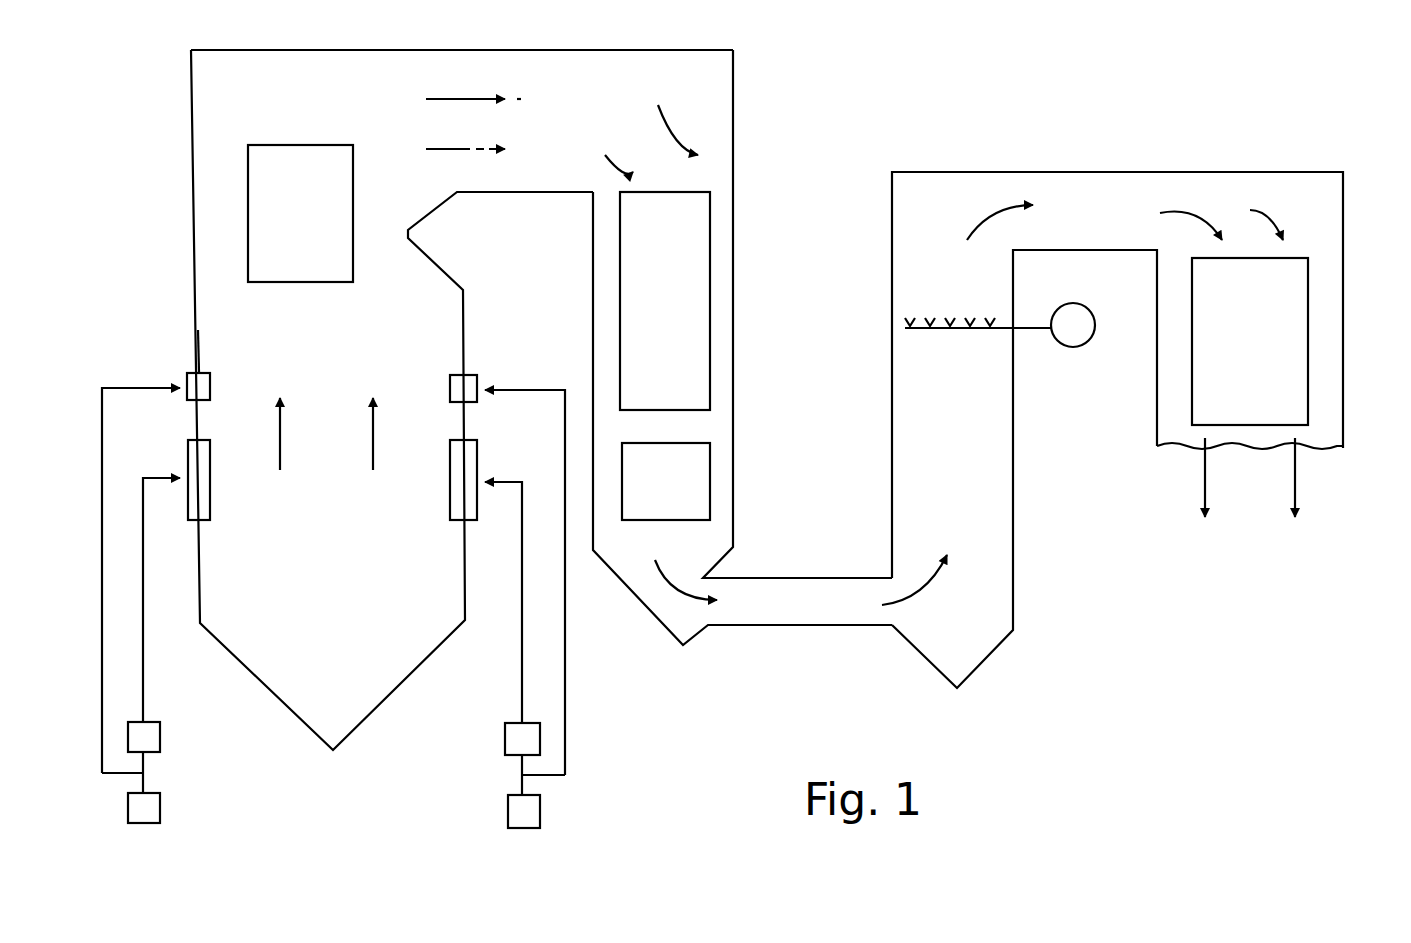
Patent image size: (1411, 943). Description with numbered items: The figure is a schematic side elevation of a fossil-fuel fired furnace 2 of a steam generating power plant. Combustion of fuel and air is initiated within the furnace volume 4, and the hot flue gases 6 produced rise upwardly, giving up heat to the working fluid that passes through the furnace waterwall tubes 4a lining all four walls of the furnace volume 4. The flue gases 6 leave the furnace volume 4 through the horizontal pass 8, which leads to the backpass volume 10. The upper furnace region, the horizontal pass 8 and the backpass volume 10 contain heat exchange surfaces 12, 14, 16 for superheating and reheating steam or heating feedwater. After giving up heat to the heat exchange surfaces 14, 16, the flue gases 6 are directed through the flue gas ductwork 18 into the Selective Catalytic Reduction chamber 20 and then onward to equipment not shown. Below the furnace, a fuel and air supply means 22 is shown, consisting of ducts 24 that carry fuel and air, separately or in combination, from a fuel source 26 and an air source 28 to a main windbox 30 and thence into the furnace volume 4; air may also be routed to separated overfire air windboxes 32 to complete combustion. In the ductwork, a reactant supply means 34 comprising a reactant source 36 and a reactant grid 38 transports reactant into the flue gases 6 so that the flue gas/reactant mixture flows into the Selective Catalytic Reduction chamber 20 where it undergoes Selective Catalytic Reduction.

The fossil-fuel fired furnace 2 is at (840, 112).
The furnace volume 4 is at (315, 520).
The furnace waterwall tubes 4a is at (199, 535).
The flue gases 6 is at (468, 99).
The horizontal pass 8 is at (590, 147).
The backpass volume 10 is at (735, 295).
The heat exchange surface 12 is at (318, 226).
The heat exchange surface 14 is at (680, 321).
The heat exchange surface 16 is at (680, 499).
The flue gas ductwork 18 is at (891, 195).
The Selective Catalytic Reduction chamber 20 is at (1220, 350).
The fuel and air supply means 22 is at (170, 840).
The ducts 24 is at (102, 473).
The fuel source 26 is at (160, 745).
The air source 28 is at (160, 815).
The main windbox 30 is at (210, 480).
The separated overfire air windboxes 32 is at (210, 382).
The reactant supply means 34 is at (1038, 385).
The reactant source 36 is at (1077, 347).
The reactant grid 38 is at (973, 330).